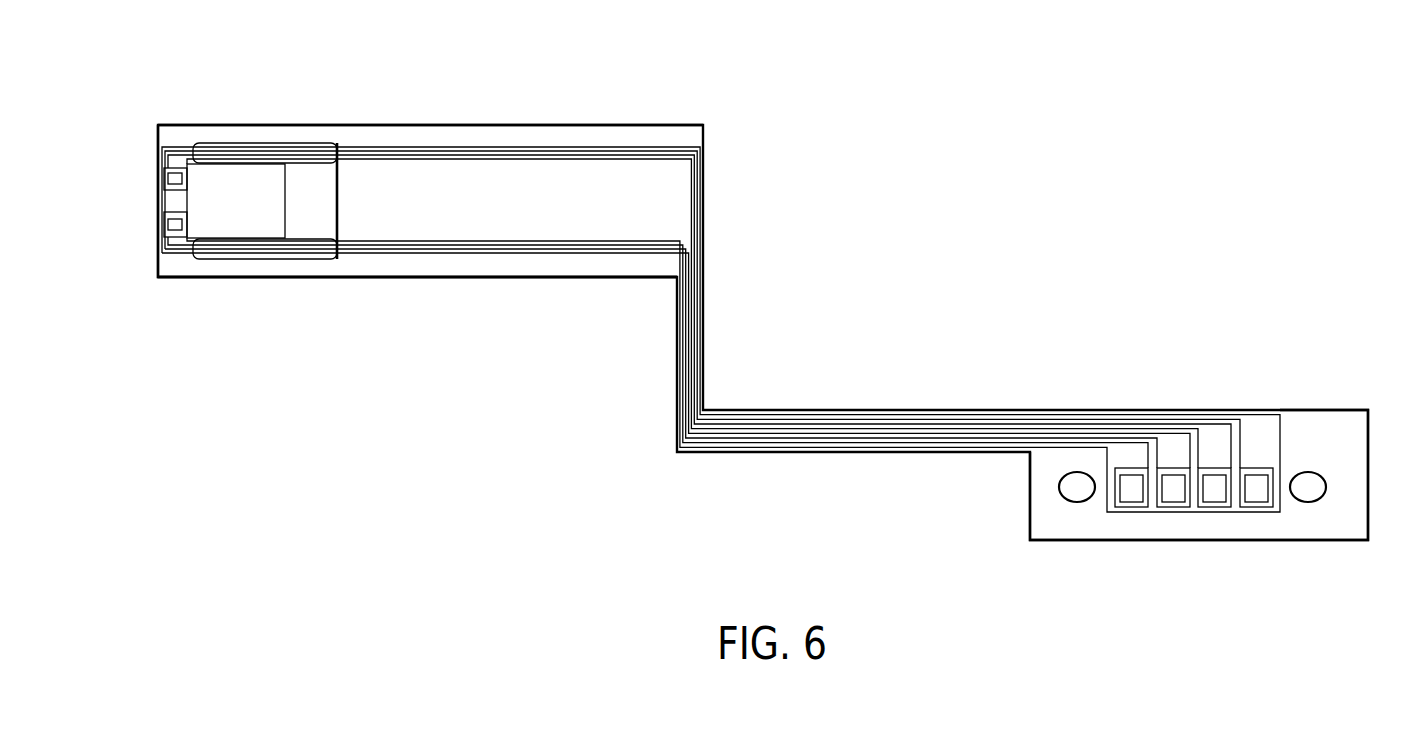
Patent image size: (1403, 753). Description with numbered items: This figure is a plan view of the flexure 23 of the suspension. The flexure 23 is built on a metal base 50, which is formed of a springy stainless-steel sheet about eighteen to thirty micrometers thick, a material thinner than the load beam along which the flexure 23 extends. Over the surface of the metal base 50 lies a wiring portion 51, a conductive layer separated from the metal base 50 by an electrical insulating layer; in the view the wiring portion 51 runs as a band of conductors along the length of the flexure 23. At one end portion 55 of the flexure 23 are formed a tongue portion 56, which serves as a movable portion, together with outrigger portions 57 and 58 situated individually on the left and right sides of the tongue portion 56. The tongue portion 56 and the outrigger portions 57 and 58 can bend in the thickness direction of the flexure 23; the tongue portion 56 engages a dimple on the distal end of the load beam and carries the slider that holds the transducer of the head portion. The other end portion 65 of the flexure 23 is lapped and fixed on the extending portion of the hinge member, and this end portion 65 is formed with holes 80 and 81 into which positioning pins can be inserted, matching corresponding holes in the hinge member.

The flexure 23 is at (650, 108).
The metal base 50 is at (480, 263).
The wiring portion 51 is at (585, 253).
The one end portion 55 is at (157, 198).
The tongue portion 56 is at (250, 180).
The outrigger portion 57 is at (198, 127).
The outrigger portion 58 is at (267, 268).
The other end portion 65 is at (1310, 430).
The hole 80 is at (1322, 482).
The hole 81 is at (1090, 483).